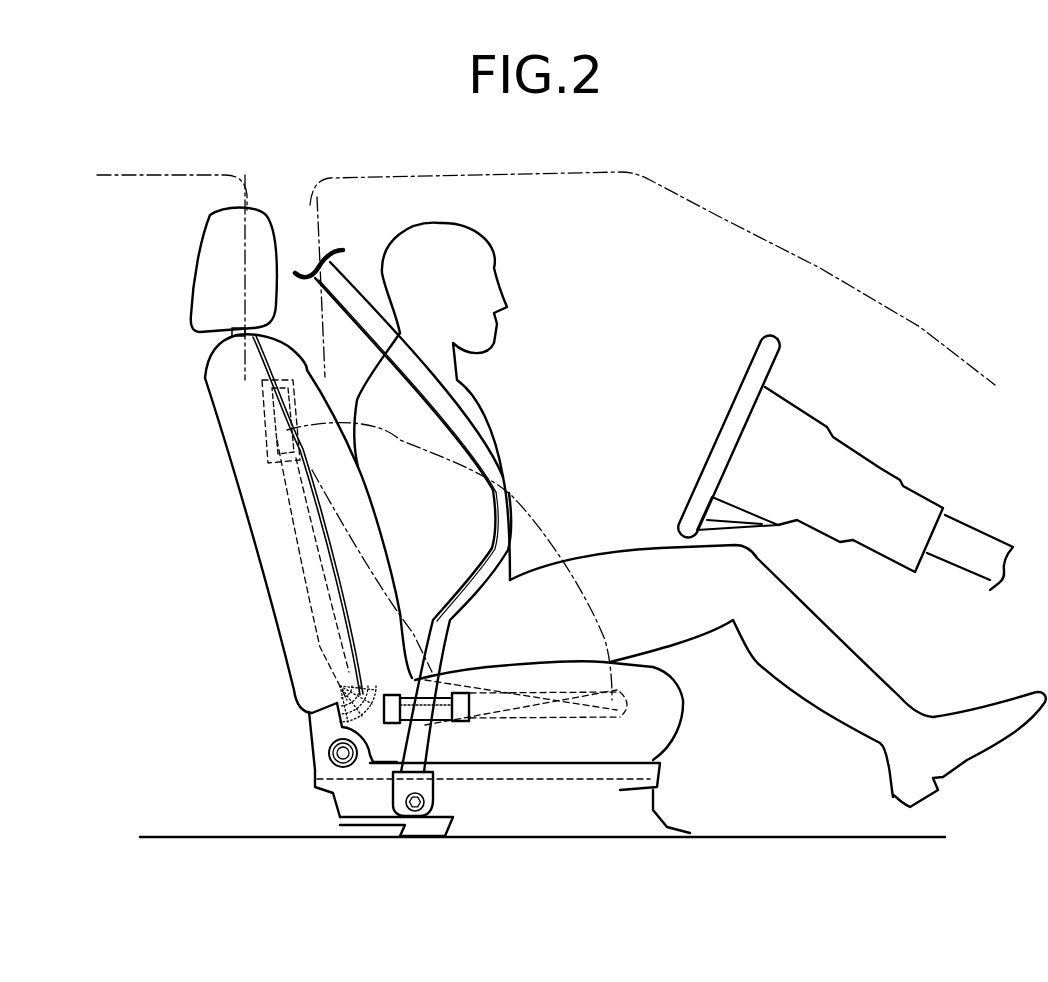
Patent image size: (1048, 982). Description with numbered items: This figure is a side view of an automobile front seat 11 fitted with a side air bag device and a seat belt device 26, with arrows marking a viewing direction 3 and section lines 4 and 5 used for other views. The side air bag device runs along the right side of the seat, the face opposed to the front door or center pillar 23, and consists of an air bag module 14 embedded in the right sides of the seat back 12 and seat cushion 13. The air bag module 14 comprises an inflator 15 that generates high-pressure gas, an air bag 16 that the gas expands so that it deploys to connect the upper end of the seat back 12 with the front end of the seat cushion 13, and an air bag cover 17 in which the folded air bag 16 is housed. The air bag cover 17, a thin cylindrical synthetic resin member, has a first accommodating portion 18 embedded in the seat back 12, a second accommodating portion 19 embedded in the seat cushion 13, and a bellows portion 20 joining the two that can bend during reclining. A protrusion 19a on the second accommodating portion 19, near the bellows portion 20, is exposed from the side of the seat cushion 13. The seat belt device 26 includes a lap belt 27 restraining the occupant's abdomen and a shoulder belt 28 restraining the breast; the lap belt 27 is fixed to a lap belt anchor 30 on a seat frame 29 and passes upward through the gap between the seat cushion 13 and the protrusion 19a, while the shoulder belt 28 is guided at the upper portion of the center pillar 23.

The front seat 11 is at (267, 633).
The seat back 12 is at (237, 447).
The seat cushion 13 is at (673, 700).
The air bag module 14 is at (317, 647).
The inflator 15 is at (267, 412).
The air bag 16 is at (550, 530).
The air bag cover 17 is at (293, 560).
The first accommodating portion 18 is at (280, 487).
The second accommodating portion 19 is at (560, 720).
The protrusion 19a is at (440, 722).
The bellows portion 20 is at (335, 719).
The center pillar 23 is at (300, 210).
The seat belt device 26 is at (513, 470).
The lap belt 27 is at (505, 586).
The shoulder belt 28 is at (463, 423).
The seat frame 29 is at (600, 837).
The lap belt anchor 30 is at (400, 795).
The direction of view of FIG. 3 is at (592, 412).
The section line 4- 4 is at (233, 543).
The section line 5- 5 is at (452, 627).